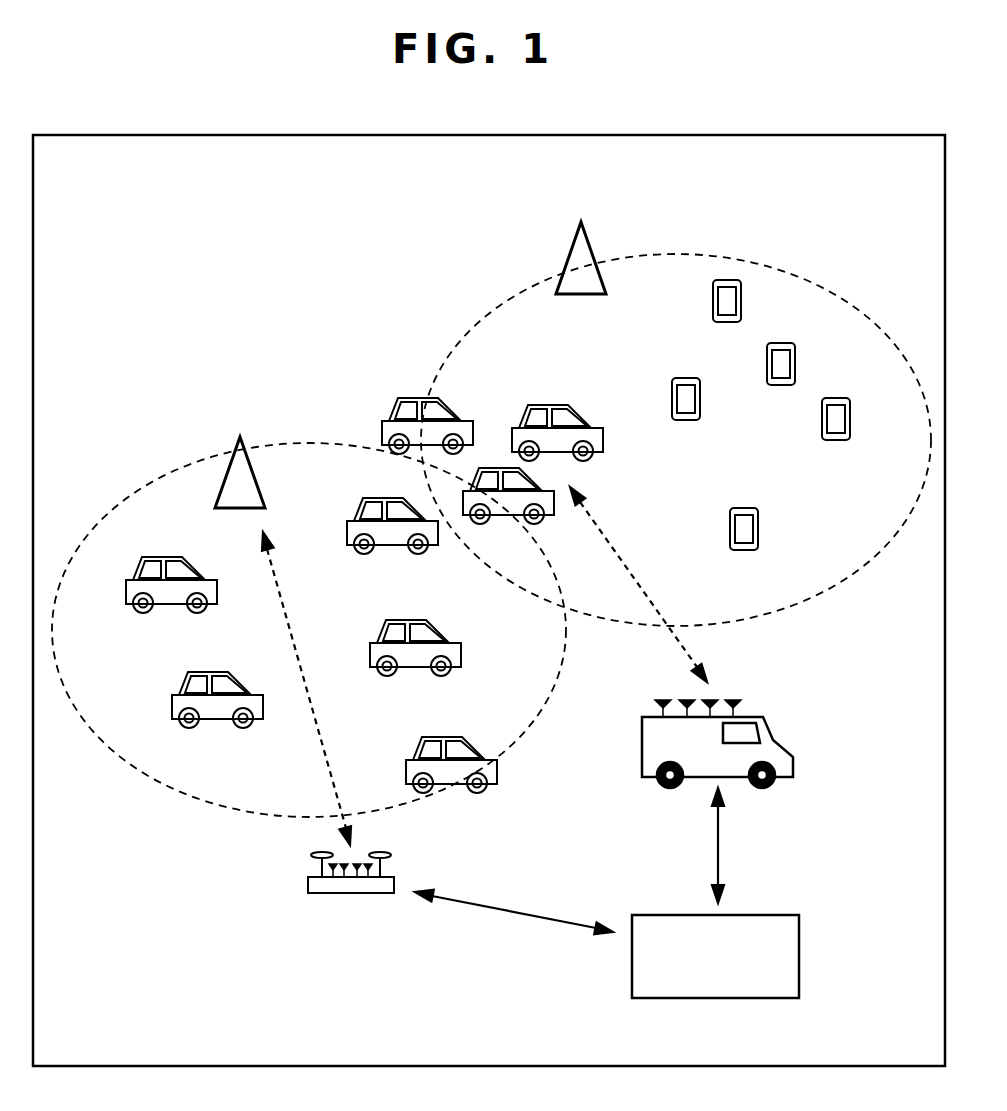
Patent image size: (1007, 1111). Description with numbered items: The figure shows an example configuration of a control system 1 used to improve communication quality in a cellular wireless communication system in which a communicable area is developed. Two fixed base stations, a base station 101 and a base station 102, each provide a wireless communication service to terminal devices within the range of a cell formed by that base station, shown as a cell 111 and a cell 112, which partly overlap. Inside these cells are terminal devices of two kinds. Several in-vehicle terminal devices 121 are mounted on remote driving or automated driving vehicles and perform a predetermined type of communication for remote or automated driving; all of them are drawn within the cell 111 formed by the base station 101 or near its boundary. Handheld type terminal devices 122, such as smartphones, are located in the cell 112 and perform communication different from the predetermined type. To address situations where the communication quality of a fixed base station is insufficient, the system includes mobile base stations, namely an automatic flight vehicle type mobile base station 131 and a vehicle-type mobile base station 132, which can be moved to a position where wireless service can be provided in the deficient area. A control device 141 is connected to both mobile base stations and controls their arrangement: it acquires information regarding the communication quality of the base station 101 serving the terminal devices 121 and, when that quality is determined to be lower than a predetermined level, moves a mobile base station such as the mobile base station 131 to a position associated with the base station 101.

The control system 1 is at (213, 245).
The base station 101 is at (222, 478).
The base station 102 is at (591, 242).
The cell 111 is at (238, 812).
The cell 112 is at (483, 312).
The in-vehicle terminal device 121 is at (205, 612).
The handheld type terminal device 122 is at (741, 312).
The automatic flight vehicle type mobile base station 131 is at (398, 882).
The vehicle-type mobile base station 132 is at (795, 752).
The control device 141 is at (630, 958).